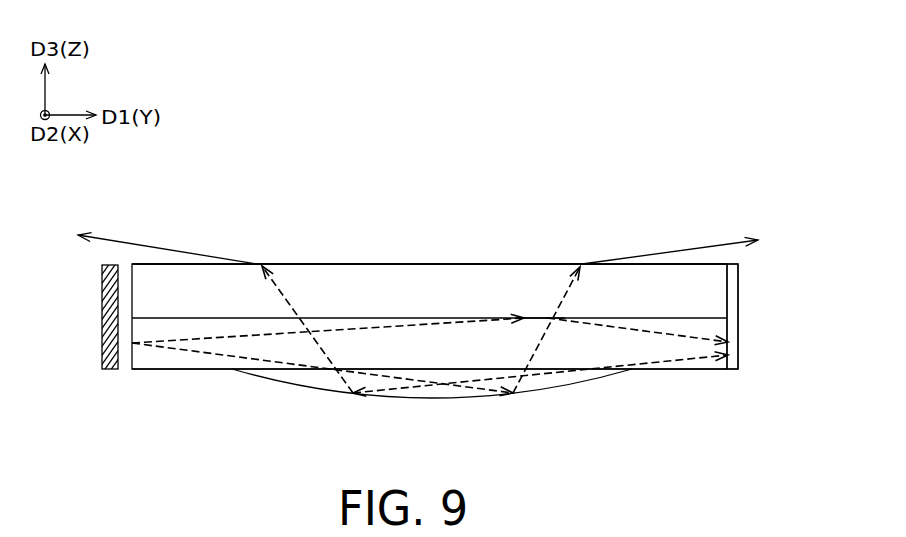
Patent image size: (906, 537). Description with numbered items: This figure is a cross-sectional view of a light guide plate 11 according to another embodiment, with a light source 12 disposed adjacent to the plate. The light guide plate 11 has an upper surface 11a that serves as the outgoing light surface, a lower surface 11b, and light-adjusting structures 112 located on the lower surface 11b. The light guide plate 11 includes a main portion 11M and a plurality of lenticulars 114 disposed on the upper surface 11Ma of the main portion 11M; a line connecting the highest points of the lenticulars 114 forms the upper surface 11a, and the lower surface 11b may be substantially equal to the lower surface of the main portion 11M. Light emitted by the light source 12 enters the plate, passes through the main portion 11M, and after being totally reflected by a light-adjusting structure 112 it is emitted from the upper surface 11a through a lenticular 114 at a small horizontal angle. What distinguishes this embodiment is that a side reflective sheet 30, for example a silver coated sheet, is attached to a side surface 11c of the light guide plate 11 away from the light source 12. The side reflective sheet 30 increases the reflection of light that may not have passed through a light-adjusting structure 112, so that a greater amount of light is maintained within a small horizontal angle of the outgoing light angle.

The light guide plate 11 is at (397, 177).
The upper surface 11a is at (437, 252).
The lower surface 11b is at (687, 370).
The side surface 11c is at (712, 356).
The main portion 11M is at (312, 320).
The upper surface of the main portion 11Ma is at (543, 316).
The light-adjusting structure 112 is at (562, 380).
The lenticular 114 is at (293, 273).
The light source 12 is at (104, 337).
The side reflective sheet 30 is at (731, 286).